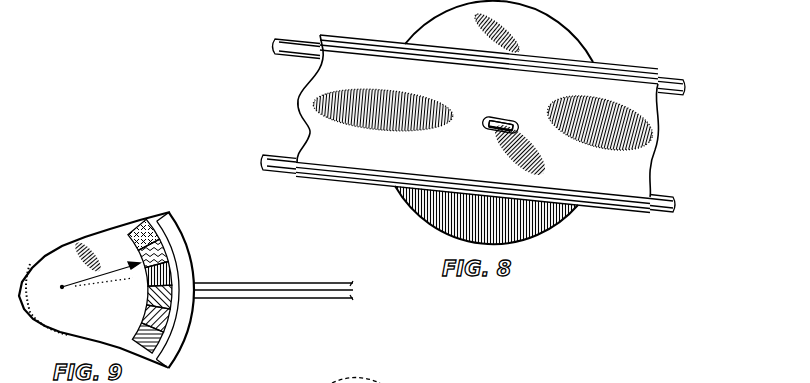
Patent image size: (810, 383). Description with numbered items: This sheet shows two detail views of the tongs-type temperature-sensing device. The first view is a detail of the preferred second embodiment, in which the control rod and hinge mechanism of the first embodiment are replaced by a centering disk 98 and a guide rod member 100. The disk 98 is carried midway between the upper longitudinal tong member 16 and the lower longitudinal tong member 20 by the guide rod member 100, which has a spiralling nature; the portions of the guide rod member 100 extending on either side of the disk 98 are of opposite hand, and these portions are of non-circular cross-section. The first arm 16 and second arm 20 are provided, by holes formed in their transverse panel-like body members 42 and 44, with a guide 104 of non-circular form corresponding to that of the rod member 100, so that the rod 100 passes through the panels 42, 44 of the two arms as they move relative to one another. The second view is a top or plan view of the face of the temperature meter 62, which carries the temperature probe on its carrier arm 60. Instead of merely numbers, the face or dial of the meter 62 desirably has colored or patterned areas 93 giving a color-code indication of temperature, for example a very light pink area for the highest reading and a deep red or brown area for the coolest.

In FIG. 8, the centering disk 98 is at (541, 16).
In FIG. 8, the panel-like body member 44 is at (653, 156).
In FIG. 8, the panel-like body member 42 is at (694, 169).
In FIG. 8, the lower longitudinal tong member 20 is at (667, 77).
In FIG. 8, the upper longitudinal tong member 16 is at (274, 46).
In FIG. 8, the guide rod member 100 is at (495, 120).
In FIG. 8, the guide 104 is at (487, 128).
In FIG. 9, the temperature meter 62 is at (191, 242).
In FIG. 9, the colored or patterned areas 93 is at (147, 347).
In FIG. 9, the carrier arm 60 is at (272, 283).